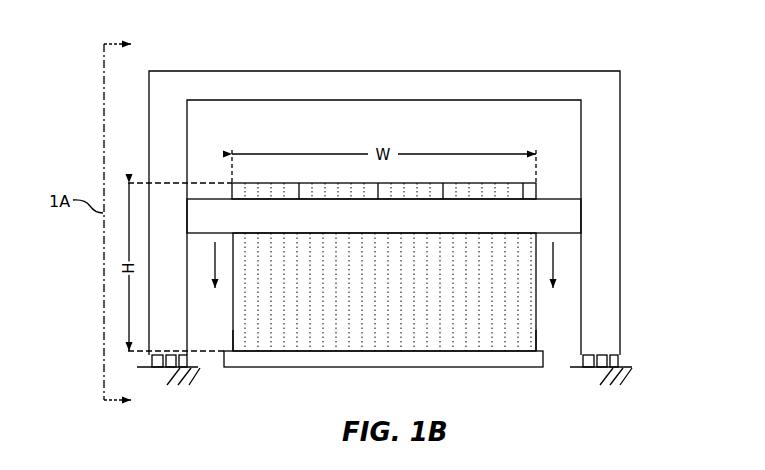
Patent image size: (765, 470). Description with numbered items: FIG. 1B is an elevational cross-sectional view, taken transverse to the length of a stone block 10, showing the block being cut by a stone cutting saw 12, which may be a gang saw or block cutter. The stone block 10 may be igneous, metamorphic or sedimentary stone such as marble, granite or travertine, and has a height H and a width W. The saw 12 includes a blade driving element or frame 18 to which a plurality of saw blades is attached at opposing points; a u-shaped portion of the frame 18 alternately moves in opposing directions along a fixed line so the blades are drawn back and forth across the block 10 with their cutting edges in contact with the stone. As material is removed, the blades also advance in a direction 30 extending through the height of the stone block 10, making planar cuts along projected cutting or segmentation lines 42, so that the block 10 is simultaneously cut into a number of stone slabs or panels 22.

The stone block 10 is at (393, 298).
The stone cutting saw 12 is at (618, 45).
The frame 18 is at (277, 224).
The stone slab 22 is at (252, 353).
The direction 30 is at (214, 268).
The segmentation line 42 is at (258, 333).